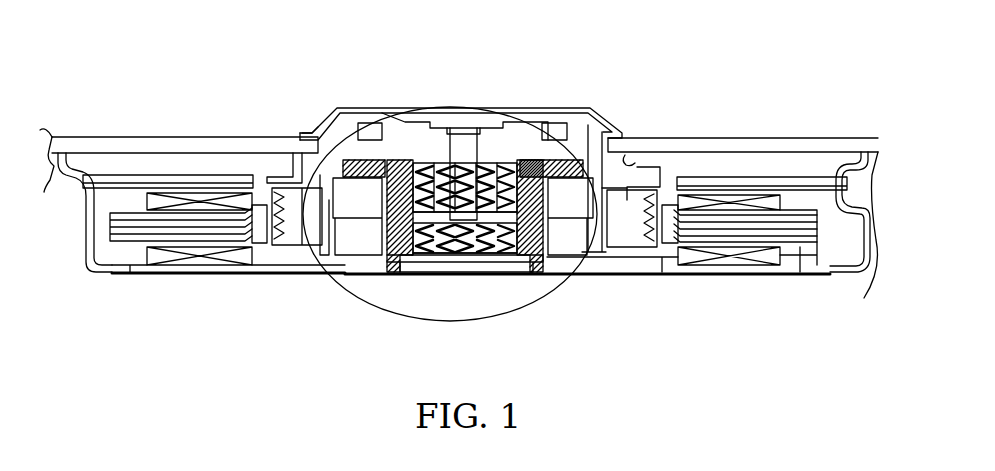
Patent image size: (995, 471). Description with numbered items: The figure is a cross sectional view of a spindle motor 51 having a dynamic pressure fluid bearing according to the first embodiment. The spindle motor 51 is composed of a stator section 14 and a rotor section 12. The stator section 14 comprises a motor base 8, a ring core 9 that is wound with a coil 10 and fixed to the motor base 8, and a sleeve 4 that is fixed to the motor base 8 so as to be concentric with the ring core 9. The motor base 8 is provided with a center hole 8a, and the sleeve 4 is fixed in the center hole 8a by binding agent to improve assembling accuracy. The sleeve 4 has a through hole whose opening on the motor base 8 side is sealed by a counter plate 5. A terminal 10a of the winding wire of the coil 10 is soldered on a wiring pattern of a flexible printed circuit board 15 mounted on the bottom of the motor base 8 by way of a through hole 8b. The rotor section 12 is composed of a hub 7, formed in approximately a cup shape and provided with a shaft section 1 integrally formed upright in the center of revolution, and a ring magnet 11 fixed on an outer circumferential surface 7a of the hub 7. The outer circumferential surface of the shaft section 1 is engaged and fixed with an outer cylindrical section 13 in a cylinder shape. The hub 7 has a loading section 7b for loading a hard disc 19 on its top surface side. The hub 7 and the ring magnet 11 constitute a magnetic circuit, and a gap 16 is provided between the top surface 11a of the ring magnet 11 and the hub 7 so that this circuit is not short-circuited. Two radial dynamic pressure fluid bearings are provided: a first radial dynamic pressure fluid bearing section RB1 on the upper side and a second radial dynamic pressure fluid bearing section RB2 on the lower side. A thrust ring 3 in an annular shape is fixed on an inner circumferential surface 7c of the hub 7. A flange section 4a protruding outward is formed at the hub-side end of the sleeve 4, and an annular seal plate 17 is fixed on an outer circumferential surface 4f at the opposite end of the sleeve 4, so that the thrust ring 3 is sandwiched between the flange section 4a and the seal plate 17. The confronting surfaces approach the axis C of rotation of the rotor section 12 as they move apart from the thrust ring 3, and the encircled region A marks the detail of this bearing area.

The spindle motor 51 is at (148, 38).
The rotor section 12 is at (760, 66).
The gap 16 is at (262, 177).
The inner circumferential surface 7c is at (312, 132).
The first radial dynamic pressure fluid bearing section RB1 is at (390, 160).
The outer cylindrical section 13 is at (427, 158).
The axis of rotation C is at (465, 300).
The hub 7 is at (505, 128).
The thrust ring 3 is at (565, 178).
The outer circumferential surface 7a is at (600, 188).
The loading section 7b is at (630, 158).
The top surface 11a is at (643, 193).
The ring magnet 11 is at (650, 200).
The hard disc 19 is at (835, 147).
The ring core 9 is at (94, 258).
The coil 10 is at (200, 265).
The through hole 8b is at (252, 267).
The motor base 8 is at (280, 263).
The sleeve 4 is at (306, 256).
The seal plate 17 is at (343, 257).
The second radial dynamic pressure fluid bearing section RB2 is at (390, 265).
The shaft section 1 is at (450, 255).
The counter plate 5 is at (510, 270).
The outer circumferential surface 4f is at (538, 270).
The center hole 8a is at (548, 263).
The flange section 4a is at (603, 250).
The terminal 10a is at (737, 272).
The flexible printed circuit board 15 is at (782, 272).
The detail region A is at (368, 318).
The stator section 14 is at (803, 321).